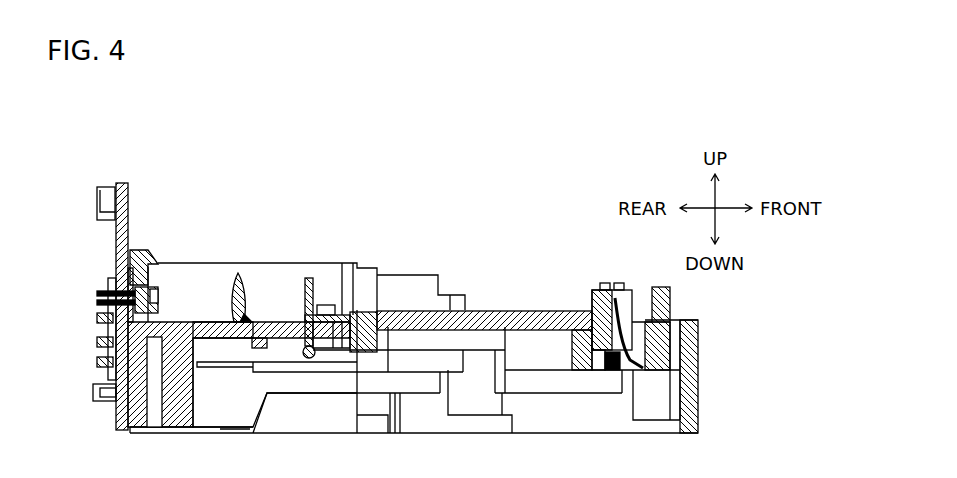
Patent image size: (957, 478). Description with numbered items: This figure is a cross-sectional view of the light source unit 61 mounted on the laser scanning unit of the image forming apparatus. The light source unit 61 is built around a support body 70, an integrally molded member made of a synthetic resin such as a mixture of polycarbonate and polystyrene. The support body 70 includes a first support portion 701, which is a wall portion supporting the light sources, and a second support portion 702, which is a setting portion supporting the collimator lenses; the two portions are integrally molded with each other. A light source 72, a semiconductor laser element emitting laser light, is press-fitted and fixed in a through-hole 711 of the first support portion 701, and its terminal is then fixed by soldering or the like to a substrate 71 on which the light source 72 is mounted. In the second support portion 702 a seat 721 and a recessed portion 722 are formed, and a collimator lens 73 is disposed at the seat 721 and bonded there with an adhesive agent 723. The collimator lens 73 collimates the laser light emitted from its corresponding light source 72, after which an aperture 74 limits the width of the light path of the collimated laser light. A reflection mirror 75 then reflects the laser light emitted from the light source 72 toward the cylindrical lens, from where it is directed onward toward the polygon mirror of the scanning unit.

The light source unit 61 is at (58, 198).
The support body 70 is at (115, 243).
The substrate 71 is at (108, 281).
The through-hole 711 is at (143, 252).
The first support portion 701 is at (152, 271).
The second support portion 702 is at (203, 320).
The light source 72 is at (160, 302).
The collimator lens 73 is at (239, 273).
The aperture 74 is at (307, 277).
The reflection mirror 75 is at (593, 288).
The seat 721 is at (235, 345).
The recessed portion 722 is at (215, 343).
The adhesive agent 723 is at (246, 318).